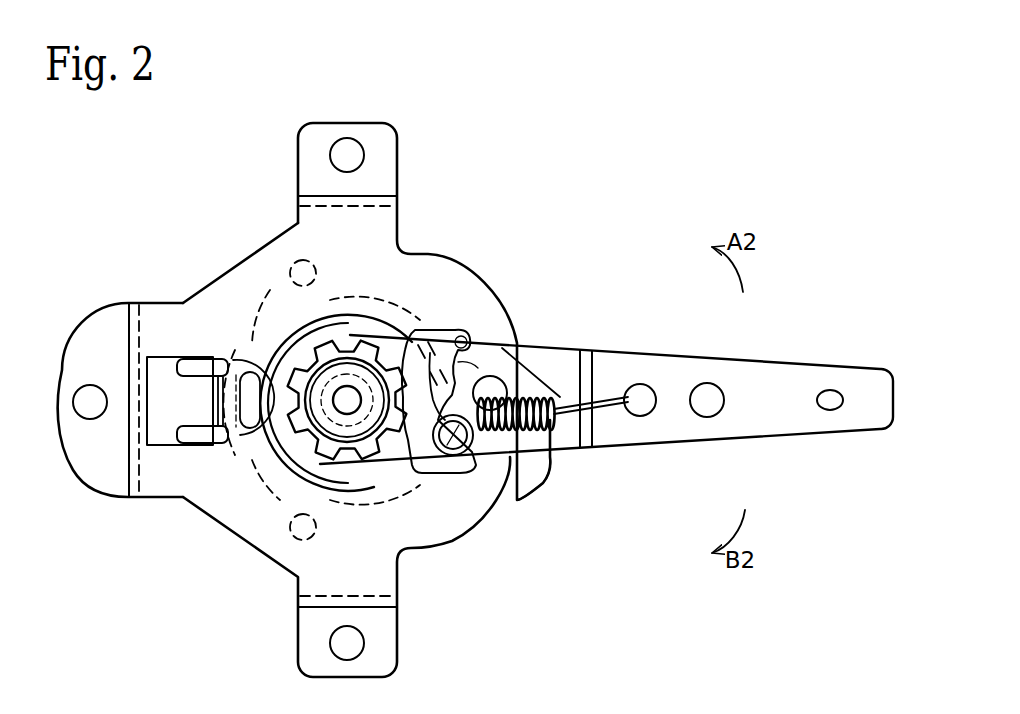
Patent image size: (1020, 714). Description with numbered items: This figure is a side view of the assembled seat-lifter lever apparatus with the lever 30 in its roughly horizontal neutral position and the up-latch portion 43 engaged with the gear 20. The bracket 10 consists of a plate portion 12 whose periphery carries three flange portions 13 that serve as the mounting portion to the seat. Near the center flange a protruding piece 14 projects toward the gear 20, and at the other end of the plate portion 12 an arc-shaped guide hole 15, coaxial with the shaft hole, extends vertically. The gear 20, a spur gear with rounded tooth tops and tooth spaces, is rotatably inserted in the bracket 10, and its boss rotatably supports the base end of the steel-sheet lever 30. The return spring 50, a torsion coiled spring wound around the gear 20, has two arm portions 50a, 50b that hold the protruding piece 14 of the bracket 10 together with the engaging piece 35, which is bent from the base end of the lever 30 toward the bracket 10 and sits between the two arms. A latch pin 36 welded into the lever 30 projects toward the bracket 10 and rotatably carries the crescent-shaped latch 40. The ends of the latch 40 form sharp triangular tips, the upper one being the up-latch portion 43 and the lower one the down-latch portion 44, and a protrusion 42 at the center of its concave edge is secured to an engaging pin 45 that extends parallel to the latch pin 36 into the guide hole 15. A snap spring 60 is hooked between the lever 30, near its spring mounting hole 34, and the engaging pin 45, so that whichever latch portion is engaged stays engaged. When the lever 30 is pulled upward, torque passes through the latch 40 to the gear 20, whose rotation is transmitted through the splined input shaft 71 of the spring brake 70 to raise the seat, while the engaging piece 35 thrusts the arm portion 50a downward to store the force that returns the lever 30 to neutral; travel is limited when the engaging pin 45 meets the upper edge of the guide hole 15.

The bracket 10 is at (480, 270).
The plate portion 12 is at (235, 292).
The flange portions 13 is at (400, 158).
The protruding piece 14 is at (175, 387).
The guide hole 15 is at (477, 377).
The gear 20 is at (287, 405).
The lever 30 is at (786, 360).
The spring mounting hole 34 is at (640, 392).
The engaging piece 35 is at (205, 399).
The latch pin 36 is at (510, 397).
The latch 40 is at (557, 463).
The protrusion 42 is at (420, 460).
The up-latch portion 43 is at (402, 333).
The down-latch portion 44 is at (527, 436).
The engaging pin 45 is at (470, 445).
The return spring 50 is at (297, 320).
The arm portion 50a is at (193, 437).
The arm portion 50b is at (200, 367).
The snap spring 60 is at (543, 513).
The spring brake 70 is at (355, 502).
The input shaft 71 is at (350, 406).